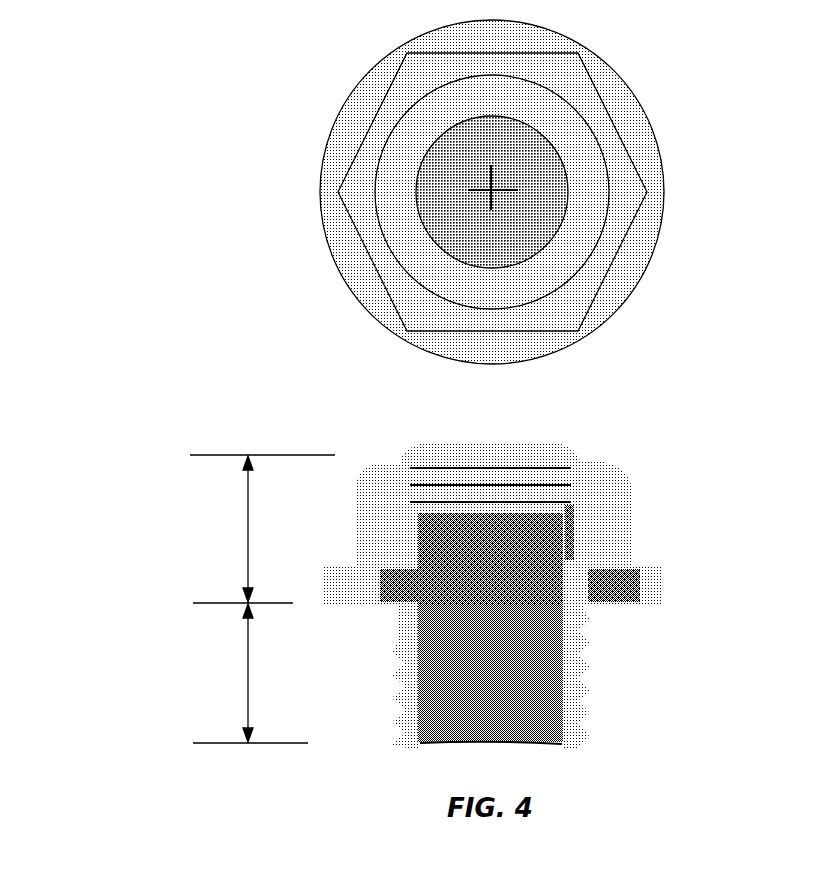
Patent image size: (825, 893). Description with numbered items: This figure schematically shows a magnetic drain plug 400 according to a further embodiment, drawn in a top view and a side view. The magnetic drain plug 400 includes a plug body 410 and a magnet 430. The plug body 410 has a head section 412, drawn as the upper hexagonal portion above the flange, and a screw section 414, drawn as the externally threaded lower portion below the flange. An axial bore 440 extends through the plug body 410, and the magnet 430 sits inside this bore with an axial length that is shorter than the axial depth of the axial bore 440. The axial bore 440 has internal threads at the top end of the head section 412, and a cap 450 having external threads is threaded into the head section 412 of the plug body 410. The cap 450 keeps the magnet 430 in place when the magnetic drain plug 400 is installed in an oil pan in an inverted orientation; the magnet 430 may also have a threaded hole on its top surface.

The magnetic drain plug 400 is at (428, 385).
The plug body 410 is at (385, 487).
The head section 412 is at (246, 532).
The screw section 414 is at (245, 667).
The magnet 430 is at (538, 643).
The axial bore 440 is at (563, 698).
The cap 450 is at (535, 166).